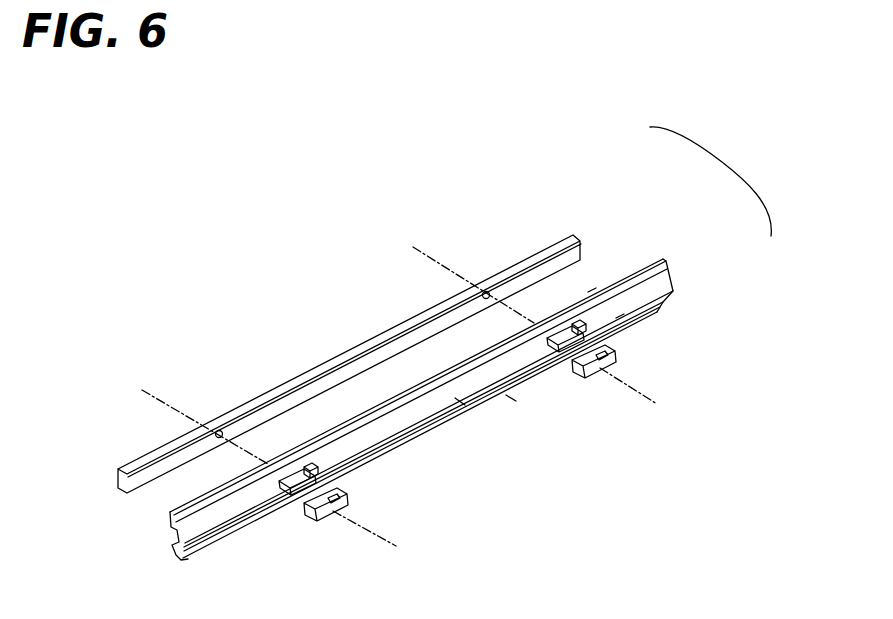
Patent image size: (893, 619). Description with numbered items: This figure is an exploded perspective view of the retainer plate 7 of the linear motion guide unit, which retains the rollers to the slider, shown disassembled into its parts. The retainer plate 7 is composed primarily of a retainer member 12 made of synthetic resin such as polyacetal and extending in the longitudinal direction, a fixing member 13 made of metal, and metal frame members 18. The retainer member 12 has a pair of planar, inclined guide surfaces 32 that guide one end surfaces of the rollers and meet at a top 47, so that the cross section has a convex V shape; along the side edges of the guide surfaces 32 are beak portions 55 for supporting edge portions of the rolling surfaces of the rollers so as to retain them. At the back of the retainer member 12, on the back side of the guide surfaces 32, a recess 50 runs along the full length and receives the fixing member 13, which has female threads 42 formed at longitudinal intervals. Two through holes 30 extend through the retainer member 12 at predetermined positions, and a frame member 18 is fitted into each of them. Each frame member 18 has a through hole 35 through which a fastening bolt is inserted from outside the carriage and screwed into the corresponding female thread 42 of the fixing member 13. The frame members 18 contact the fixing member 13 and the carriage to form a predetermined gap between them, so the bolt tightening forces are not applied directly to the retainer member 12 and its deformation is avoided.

The retainer plate 7 is at (728, 166).
The retainer member 12 is at (658, 249).
The fixing member 13 is at (570, 219).
The frame member 18 is at (618, 352).
The through hole 30 is at (291, 496).
The guide surface 32 is at (460, 401).
The through hole 35 is at (334, 512).
The female thread 42 is at (487, 291).
The top 47 is at (511, 398).
The recess 50 is at (172, 539).
The beak portion 55 is at (619, 320).